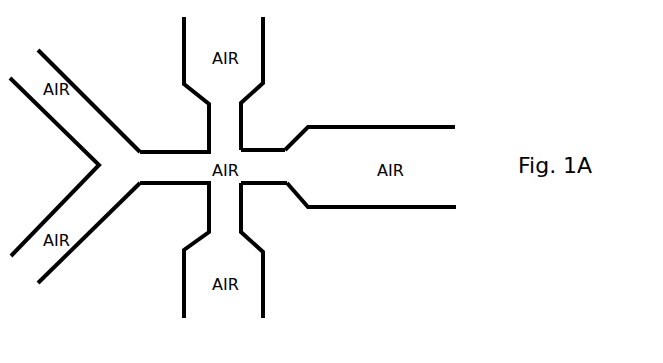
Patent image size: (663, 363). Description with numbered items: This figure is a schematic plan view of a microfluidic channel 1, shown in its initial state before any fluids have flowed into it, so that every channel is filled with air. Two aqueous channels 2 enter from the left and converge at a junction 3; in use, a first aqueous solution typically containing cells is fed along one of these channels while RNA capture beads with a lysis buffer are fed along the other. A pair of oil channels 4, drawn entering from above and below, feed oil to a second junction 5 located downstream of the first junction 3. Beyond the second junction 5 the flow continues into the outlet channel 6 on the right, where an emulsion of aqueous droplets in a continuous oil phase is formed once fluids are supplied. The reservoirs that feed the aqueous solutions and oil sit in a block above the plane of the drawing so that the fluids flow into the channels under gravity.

The microfluidic channel 1 is at (369, 57).
The aqueous channels 2 is at (63, 72).
The junction 3 is at (103, 137).
The oil channels 4 is at (265, 53).
The second junction 5 is at (243, 147).
The outlet channel 6 is at (362, 125).